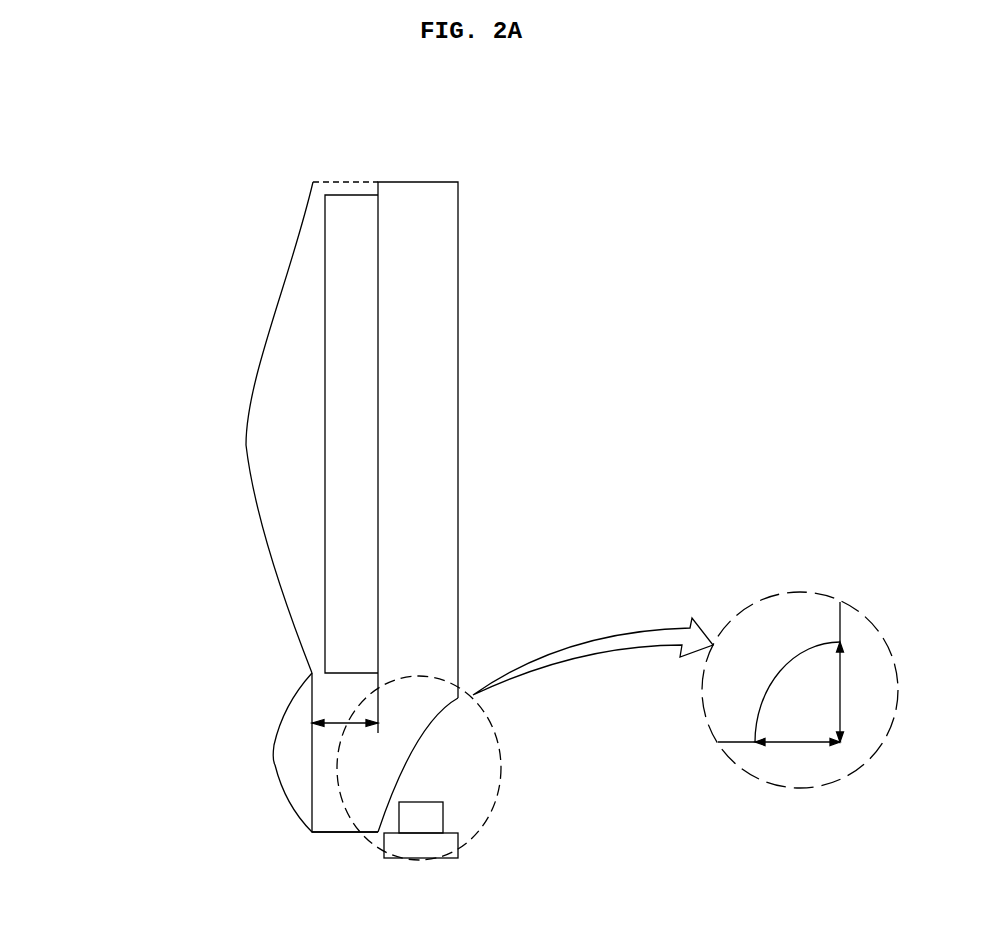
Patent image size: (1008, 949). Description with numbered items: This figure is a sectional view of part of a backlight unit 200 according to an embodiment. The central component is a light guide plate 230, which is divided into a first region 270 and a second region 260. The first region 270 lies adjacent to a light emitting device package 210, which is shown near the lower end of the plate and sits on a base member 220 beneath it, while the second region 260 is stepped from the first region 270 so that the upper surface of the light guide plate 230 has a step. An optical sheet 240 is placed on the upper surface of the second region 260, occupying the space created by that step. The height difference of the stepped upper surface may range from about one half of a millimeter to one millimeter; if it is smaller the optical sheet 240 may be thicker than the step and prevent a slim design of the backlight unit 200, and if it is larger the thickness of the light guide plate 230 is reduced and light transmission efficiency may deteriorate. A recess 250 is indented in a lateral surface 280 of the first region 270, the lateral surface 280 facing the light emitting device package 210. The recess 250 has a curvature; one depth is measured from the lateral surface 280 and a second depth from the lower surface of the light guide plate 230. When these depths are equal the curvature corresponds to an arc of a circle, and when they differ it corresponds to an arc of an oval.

The backlight unit 200 is at (108, 176).
The light emitting device package 210 is at (429, 822).
The printed circuit board 220 is at (437, 847).
The light guide plate 230 is at (785, 637).
The optical sheet 240 is at (353, 392).
The recess 250 is at (432, 722).
The second region 260 is at (247, 445).
The first region 270 is at (274, 750).
The lateral surface 280 is at (337, 833).